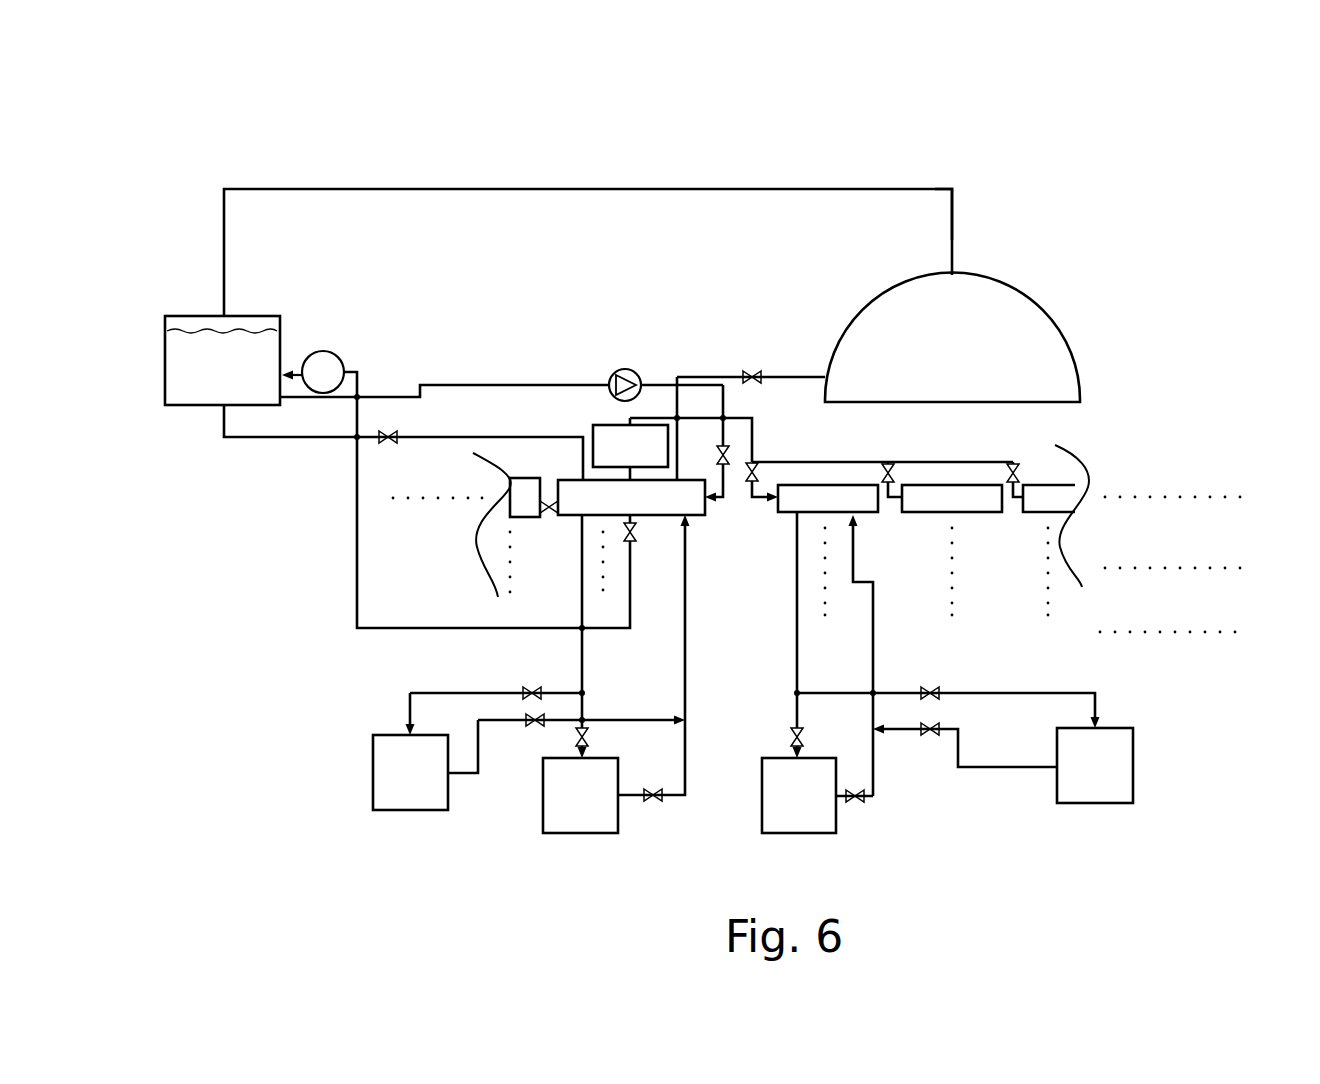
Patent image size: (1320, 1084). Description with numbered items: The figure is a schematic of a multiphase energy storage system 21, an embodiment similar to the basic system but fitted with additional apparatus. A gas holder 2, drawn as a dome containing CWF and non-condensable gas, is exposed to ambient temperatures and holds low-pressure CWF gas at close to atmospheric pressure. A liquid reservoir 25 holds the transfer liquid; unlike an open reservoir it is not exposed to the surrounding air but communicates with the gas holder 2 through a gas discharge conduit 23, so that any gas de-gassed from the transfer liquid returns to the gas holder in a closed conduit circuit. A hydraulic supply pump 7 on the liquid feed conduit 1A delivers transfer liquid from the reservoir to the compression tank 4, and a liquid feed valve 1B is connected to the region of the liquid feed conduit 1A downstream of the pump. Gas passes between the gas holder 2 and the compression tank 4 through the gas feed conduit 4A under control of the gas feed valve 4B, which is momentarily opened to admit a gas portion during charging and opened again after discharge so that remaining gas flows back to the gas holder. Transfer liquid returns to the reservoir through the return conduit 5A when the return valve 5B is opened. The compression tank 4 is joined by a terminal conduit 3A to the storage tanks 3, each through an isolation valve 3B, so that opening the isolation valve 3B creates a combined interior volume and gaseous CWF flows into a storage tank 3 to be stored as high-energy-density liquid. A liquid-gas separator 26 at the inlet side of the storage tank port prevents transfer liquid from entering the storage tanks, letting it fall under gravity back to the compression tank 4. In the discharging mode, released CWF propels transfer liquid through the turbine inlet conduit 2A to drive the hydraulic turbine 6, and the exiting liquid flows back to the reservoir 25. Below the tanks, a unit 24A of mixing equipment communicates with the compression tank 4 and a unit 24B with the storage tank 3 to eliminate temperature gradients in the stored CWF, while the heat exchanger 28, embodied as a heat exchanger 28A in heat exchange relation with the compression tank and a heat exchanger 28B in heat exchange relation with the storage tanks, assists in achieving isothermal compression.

The gas discharge conduit 23 is at (513, 187).
The multiphase energy storage system 21 is at (992, 155).
The gas holder 2 is at (1003, 270).
The liquid reservoir 25 is at (290, 300).
The hydraulic turbine 6 is at (320, 338).
The liquid feed conduit 1A is at (450, 383).
The hydraulic supply pump 7 is at (600, 368).
The gas feed conduit 4A is at (742, 365).
The gas feed valve 4B is at (765, 365).
The terminal conduit 3A is at (838, 462).
The liquid-gas separator 26 is at (592, 437).
The compression tank 4 is at (666, 530).
The return conduit 5A is at (248, 440).
The return valve 5B is at (372, 449).
The turbine inlet conduit 2A is at (355, 587).
The heat exchanger 28 is at (639, 552).
The isolation valve 3B is at (763, 493).
The liquid feed valve 1B is at (731, 476).
The storage tank 3 is at (880, 520).
The heat exchanger 28A is at (448, 800).
The unit of mixing equipment 24A is at (618, 823).
The unit of mixing equipment 24B is at (836, 823).
The heat exchanger 28B is at (1133, 773).